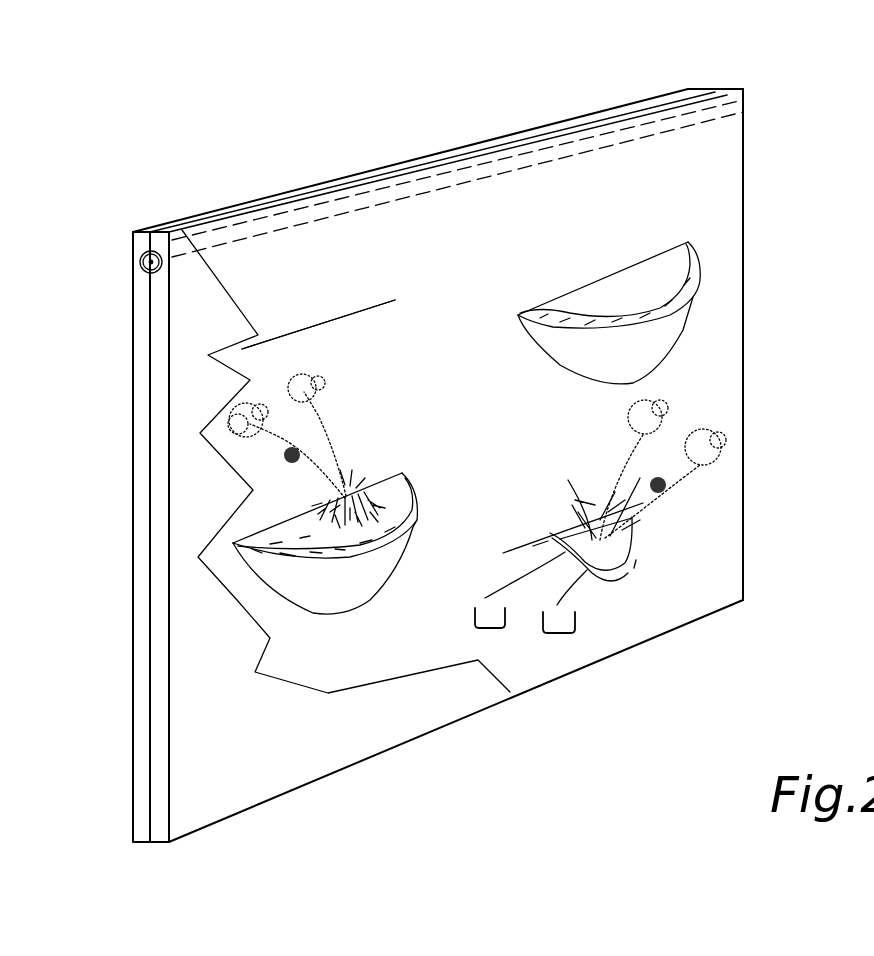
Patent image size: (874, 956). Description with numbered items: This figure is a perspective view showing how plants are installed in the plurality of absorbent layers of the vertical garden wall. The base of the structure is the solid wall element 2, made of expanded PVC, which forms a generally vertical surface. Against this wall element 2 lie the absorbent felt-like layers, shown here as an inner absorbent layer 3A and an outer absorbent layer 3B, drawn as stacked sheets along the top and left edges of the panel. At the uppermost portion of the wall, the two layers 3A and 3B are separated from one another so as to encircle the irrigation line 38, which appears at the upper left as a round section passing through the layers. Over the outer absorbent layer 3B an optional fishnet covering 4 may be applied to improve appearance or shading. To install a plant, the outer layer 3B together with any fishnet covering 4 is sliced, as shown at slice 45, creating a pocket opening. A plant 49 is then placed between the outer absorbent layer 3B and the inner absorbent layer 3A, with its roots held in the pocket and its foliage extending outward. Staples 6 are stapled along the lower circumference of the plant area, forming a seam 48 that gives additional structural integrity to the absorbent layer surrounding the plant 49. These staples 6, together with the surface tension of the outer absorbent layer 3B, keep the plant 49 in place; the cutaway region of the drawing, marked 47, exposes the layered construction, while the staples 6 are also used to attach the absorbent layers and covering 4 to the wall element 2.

The wall element 2 is at (723, 84).
The absorbent layer 3A is at (662, 102).
The outer absorbent layer 3B is at (718, 133).
The fishnet covering 4 is at (408, 705).
The staples 6 is at (582, 620).
The irrigation line 38 is at (151, 262).
The slice 45 is at (292, 327).
The planting pocket 47 is at (277, 503).
The seam 48 is at (640, 563).
The plant 49 is at (227, 420).